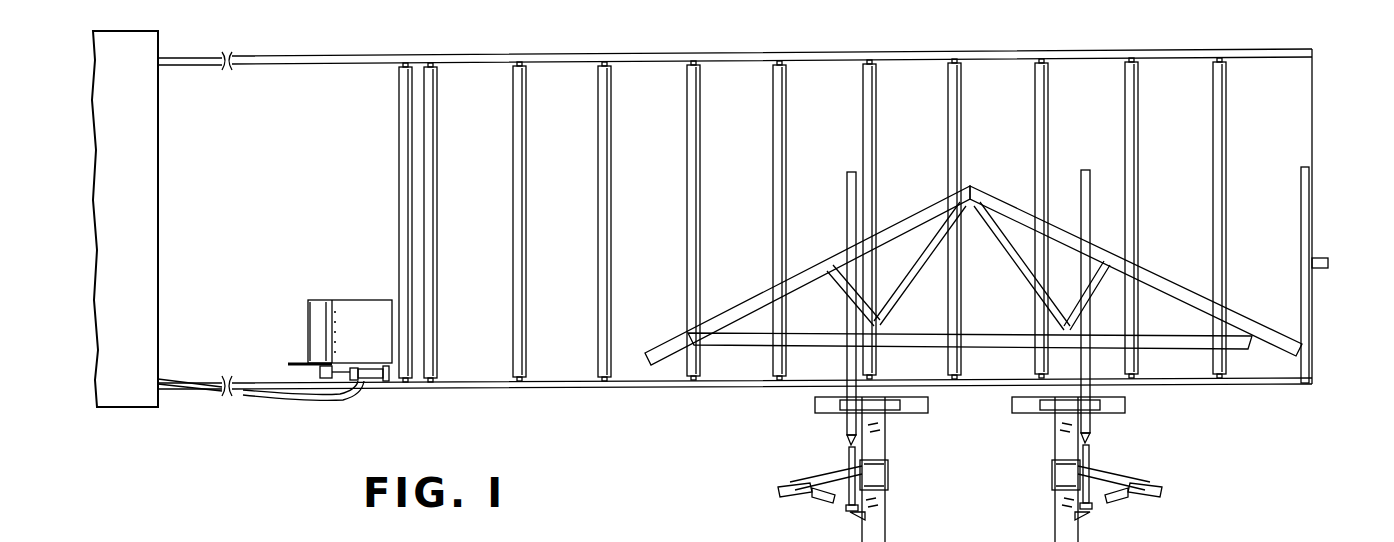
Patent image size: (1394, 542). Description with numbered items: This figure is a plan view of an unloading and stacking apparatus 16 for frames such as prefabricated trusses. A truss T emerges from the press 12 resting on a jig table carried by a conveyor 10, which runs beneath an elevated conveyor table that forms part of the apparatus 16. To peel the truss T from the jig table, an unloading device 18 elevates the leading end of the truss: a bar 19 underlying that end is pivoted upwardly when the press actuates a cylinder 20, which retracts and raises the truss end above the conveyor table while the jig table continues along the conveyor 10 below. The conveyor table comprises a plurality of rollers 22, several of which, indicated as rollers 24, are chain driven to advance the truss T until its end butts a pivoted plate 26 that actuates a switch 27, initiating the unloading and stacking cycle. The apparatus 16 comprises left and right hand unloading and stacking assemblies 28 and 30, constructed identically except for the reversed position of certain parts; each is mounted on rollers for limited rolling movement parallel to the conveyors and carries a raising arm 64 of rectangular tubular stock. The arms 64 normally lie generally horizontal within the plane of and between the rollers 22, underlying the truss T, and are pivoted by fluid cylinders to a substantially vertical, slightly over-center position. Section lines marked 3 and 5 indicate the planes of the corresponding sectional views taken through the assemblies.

The conveyor 10 is at (185, 84).
The press 12 is at (158, 232).
The unloading and stacking apparatus 16 is at (795, 452).
The unloading device 18 is at (321, 282).
The bar 19 is at (318, 338).
The cylinder 20 is at (373, 382).
The rollers 22 is at (686, 78).
The chain driven rollers 24 is at (598, 78).
The pivoted plate 26 is at (1301, 182).
The switch 27 is at (1326, 270).
The left hand unloading and stacking assembly 28 is at (884, 438).
The right hand unloading and stacking assembly 30 is at (1057, 437).
The raising arm 64 is at (848, 190).
The truss T is at (745, 304).
The section line for FIG. 3 is at (1180, 177).
The section line for FIG. 5 is at (928, 185).